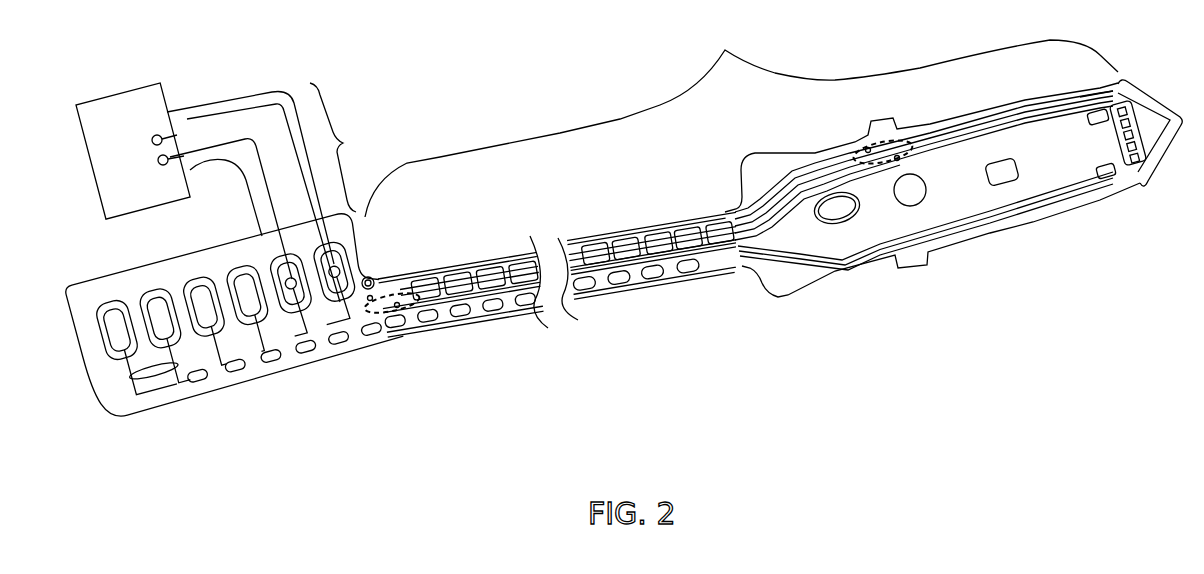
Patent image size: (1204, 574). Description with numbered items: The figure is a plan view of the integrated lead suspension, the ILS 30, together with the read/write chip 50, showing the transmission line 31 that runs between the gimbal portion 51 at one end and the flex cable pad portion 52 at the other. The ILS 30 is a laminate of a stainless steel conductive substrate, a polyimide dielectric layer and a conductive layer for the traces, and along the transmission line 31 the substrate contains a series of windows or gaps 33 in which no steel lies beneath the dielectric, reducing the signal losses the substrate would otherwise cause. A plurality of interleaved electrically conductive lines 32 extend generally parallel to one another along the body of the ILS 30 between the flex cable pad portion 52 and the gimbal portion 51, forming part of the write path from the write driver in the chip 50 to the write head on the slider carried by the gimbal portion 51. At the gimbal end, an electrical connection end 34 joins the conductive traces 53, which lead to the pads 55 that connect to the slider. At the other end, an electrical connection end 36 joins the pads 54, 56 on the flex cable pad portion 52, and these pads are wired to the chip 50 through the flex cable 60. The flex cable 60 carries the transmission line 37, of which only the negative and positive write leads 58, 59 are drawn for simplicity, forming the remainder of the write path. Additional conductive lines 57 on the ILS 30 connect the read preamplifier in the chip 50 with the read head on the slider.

The ILS 30 is at (800, 291).
The transmission line 31 is at (727, 50).
The interleaved electrically conductive traces or lines 32 is at (590, 245).
The windows or gaps 33 is at (622, 264).
The electrical connection end 34 is at (850, 140).
The electrical connection end 36 is at (390, 277).
The transmission line 37 is at (342, 147).
The chip 50 is at (110, 110).
The gimbal portion 51 is at (1017, 140).
The flex cable pad portion 52 is at (288, 337).
The conductive traces 53 is at (1075, 108).
The pad 54 is at (342, 262).
The pads 55 is at (1112, 133).
The pad 56 is at (305, 340).
The conductive traces or lines 57 is at (162, 373).
The −W electrical lead 58 is at (253, 197).
The +W electrical lead 59 is at (222, 114).
The flex cable 60 is at (262, 93).